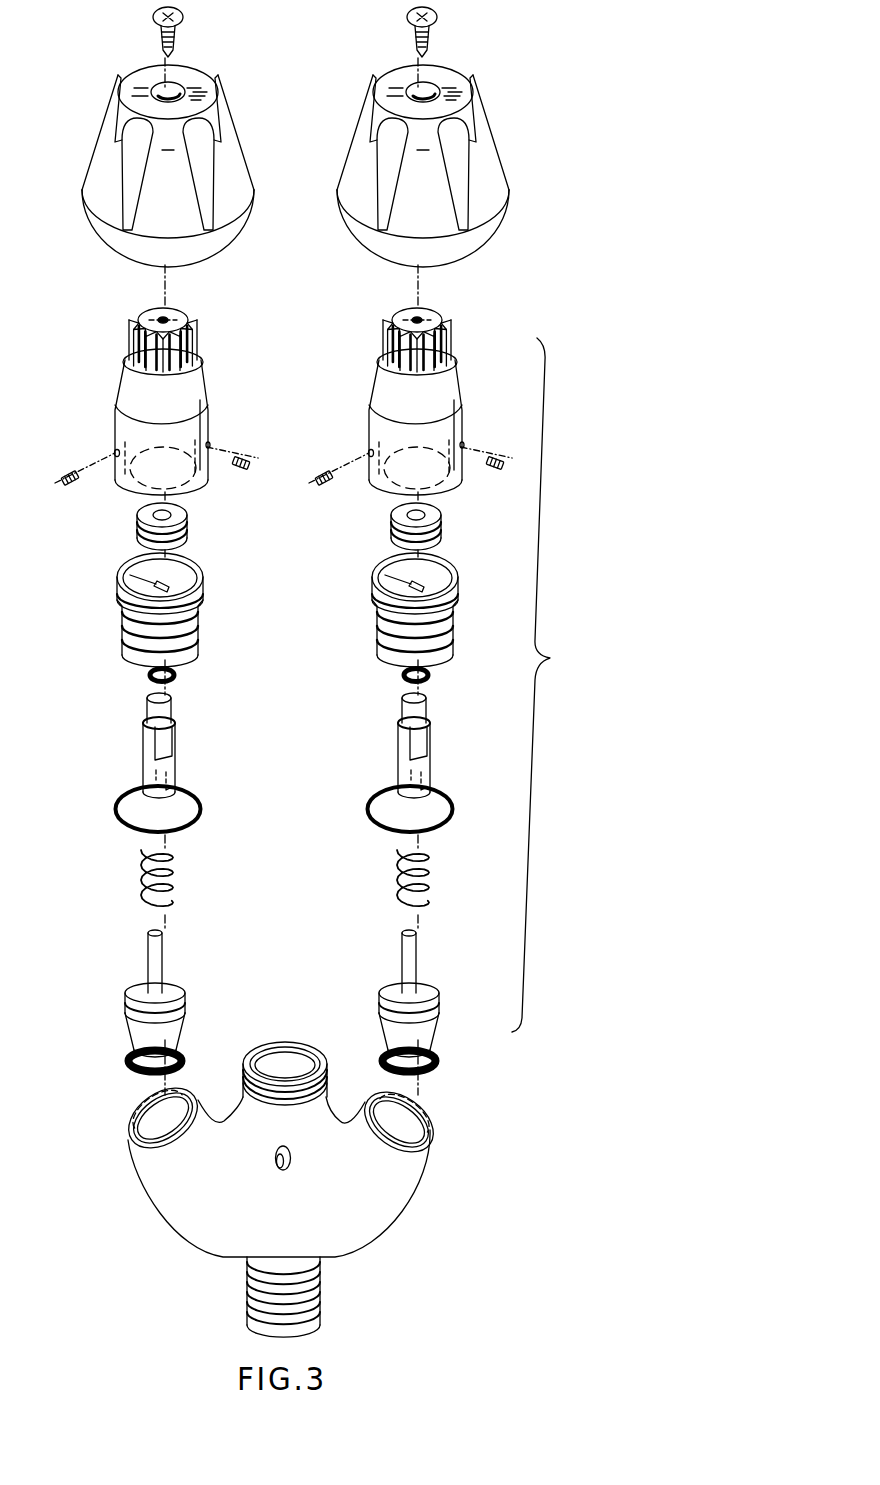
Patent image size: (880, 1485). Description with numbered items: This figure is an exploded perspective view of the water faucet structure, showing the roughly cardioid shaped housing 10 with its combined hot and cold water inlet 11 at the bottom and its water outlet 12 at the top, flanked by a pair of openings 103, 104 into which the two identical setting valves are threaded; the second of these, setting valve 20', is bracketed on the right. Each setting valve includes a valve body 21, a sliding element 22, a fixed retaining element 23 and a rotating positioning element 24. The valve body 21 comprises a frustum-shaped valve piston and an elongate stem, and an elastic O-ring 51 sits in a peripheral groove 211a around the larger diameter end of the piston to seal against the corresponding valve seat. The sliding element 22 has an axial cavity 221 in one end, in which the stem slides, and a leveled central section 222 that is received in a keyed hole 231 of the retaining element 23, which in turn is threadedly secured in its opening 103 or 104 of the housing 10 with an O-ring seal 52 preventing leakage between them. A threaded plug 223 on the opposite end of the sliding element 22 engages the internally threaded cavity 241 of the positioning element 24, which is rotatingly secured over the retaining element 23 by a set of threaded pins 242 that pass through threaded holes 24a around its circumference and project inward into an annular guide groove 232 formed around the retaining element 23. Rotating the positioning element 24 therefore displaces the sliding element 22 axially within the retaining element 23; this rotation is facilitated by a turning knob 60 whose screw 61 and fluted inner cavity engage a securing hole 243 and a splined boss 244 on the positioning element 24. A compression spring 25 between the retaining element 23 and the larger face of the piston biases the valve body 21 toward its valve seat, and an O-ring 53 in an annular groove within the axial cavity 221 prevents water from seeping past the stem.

The housing 10 is at (276, 1163).
The combined hot and cold water inlet 11 is at (320, 1290).
The water outlet 12 is at (262, 1047).
The opening 103 is at (128, 1128).
The opening 104 is at (432, 1113).
The setting valve 20' is at (548, 685).
The valve body 21 is at (122, 984).
The peripheral groove 211a is at (128, 1013).
The sliding element 22 is at (166, 721).
The axial cavity 221 is at (172, 772).
The leveled central section 222 is at (165, 742).
The threaded plug 223 is at (177, 520).
The fixed retaining element 23 is at (168, 606).
The keyed hole 231 is at (195, 580).
The annular guide groove 232 is at (198, 615).
The rotating positioning element 24 is at (157, 382).
The threaded holes 24a is at (118, 452).
The internally threaded cavity 241 is at (173, 445).
The threaded pins 242 is at (245, 467).
The securing hole 243 is at (172, 317).
The splined boss 244 is at (198, 337).
The compression spring 25 is at (140, 872).
The elastic O-ring 51 is at (133, 1061).
The O-ring seal 52 is at (122, 793).
The O-ring 53 is at (145, 668).
The turning knob 60 is at (98, 143).
The screw 61 is at (178, 42).